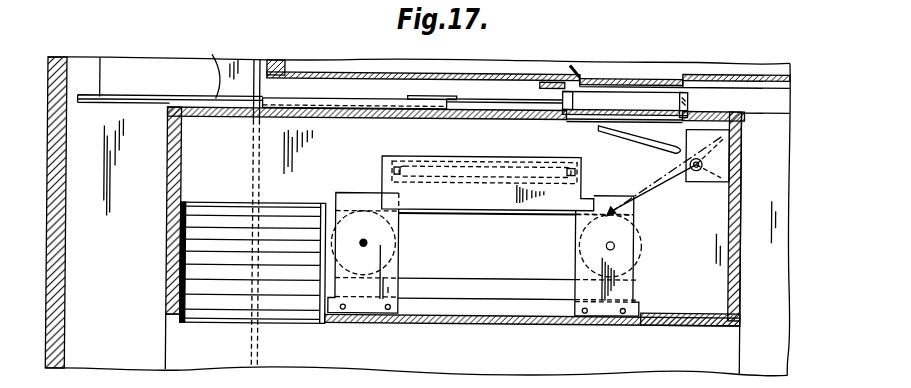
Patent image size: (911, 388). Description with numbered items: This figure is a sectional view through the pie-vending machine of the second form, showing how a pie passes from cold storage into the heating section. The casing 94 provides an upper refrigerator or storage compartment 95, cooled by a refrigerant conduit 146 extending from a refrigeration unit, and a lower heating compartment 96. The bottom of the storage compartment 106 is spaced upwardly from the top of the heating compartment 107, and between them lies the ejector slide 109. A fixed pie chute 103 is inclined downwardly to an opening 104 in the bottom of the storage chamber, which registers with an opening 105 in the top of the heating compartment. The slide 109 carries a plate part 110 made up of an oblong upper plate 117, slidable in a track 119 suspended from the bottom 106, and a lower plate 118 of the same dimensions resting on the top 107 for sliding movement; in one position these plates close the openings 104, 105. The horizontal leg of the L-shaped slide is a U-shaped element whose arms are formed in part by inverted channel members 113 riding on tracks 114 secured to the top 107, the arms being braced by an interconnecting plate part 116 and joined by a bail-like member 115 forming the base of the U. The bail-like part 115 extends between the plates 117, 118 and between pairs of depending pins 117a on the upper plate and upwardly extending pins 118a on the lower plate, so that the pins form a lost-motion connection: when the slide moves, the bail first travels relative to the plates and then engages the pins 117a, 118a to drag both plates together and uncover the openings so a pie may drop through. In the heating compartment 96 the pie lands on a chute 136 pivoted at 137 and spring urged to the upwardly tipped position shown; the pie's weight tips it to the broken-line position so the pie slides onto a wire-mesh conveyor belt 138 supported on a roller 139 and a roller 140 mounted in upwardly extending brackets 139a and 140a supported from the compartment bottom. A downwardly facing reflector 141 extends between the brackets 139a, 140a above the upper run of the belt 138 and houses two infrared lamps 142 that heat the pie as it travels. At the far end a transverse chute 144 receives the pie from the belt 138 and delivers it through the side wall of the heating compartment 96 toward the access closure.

The casing 94 is at (62, 311).
The upper refrigerator or storage compartment 95 is at (279, 62).
The lower heating compartment 96 is at (177, 133).
The fixed pie chute 103 is at (572, 64).
The opening 104 is at (618, 77).
The opening 105 is at (568, 124).
The bottom of the storage compartment 106 is at (347, 77).
The top of the heating compartment 107 is at (207, 106).
The slide 109 is at (113, 94).
The plate part 110 is at (663, 76).
The inverted channel members 113 is at (215, 64).
The tracks 114 is at (350, 110).
The bail-like member 115 is at (480, 98).
The interconnecting plate part 116 is at (427, 93).
The upper plate 117 is at (597, 76).
The depending pins 117a is at (563, 91).
The lower plate 118 is at (586, 119).
The pins 118a is at (582, 93).
The track 119 is at (733, 84).
The chute 136 is at (636, 131).
The pivot 137 is at (697, 166).
The conveyor belt 138 is at (512, 212).
The roller 139 is at (395, 231).
The bracket 139a is at (350, 194).
The roller 140 is at (583, 229).
The bracket 140a is at (627, 287).
The reflector 141 is at (430, 161).
The infrared lamps 142 is at (476, 175).
The chute 144 is at (221, 216).
The refrigerant conduit 146 is at (256, 66).